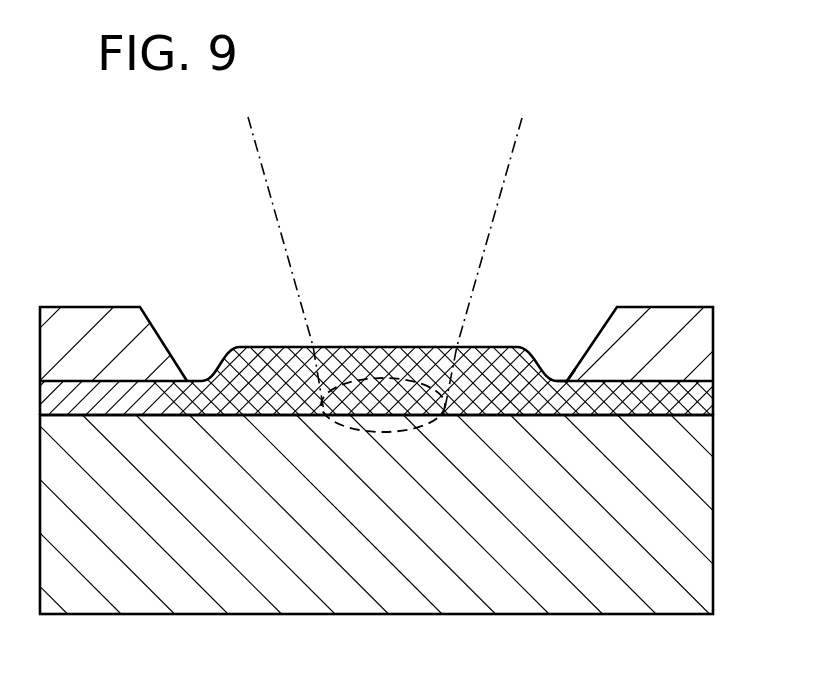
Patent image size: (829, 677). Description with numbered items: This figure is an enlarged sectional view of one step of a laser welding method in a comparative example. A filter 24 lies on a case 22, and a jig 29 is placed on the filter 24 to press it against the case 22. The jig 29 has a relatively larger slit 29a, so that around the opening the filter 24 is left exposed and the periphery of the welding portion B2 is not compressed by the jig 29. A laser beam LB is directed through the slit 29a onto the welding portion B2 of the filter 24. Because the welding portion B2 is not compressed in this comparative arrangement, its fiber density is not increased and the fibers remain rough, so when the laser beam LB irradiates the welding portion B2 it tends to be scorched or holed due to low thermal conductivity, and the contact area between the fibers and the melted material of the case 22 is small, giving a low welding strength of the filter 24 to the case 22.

The case 22 is at (703, 483).
The filter 24 is at (705, 403).
The jig 29 is at (703, 348).
The slit 29a is at (566, 380).
The welding portion B2 is at (354, 373).
The laser beam LB is at (512, 162).